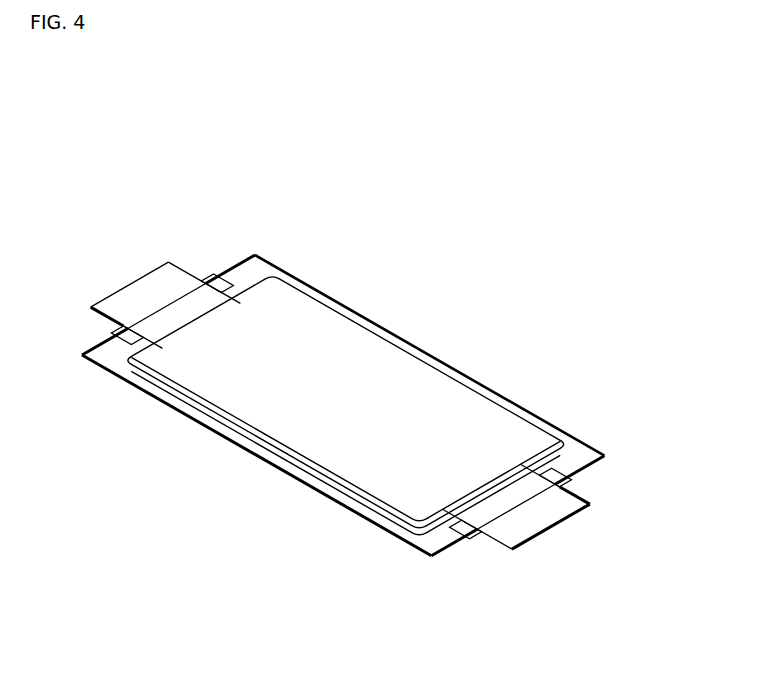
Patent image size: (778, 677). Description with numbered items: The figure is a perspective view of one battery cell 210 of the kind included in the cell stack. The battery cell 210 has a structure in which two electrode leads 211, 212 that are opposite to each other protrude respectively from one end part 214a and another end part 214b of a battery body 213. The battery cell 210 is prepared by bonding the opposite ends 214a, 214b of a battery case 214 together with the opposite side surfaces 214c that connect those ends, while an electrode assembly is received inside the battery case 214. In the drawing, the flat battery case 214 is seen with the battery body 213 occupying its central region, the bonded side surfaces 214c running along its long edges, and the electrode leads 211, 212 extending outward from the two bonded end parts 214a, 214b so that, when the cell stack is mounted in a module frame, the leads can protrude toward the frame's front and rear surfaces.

The battery cell 210 is at (348, 89).
The electrode lead 211 is at (136, 279).
The electrode lead 212 is at (566, 520).
The battery body 213 is at (372, 348).
The battery case 214 is at (597, 449).
The one end part 214a is at (254, 253).
The another end part 214b is at (444, 543).
The side surfaces 214c is at (487, 387).